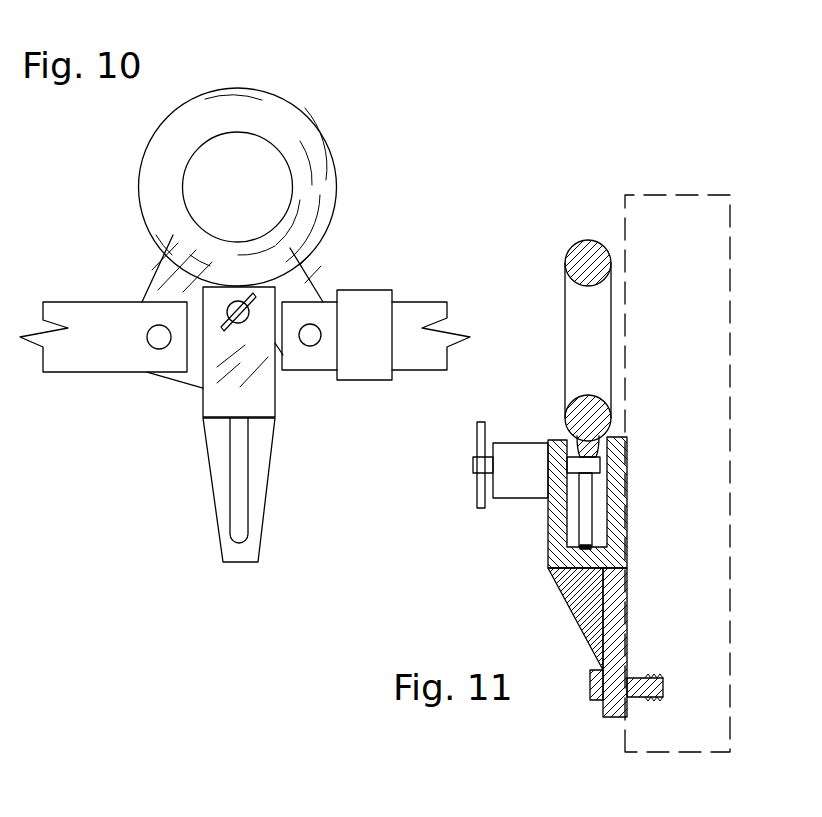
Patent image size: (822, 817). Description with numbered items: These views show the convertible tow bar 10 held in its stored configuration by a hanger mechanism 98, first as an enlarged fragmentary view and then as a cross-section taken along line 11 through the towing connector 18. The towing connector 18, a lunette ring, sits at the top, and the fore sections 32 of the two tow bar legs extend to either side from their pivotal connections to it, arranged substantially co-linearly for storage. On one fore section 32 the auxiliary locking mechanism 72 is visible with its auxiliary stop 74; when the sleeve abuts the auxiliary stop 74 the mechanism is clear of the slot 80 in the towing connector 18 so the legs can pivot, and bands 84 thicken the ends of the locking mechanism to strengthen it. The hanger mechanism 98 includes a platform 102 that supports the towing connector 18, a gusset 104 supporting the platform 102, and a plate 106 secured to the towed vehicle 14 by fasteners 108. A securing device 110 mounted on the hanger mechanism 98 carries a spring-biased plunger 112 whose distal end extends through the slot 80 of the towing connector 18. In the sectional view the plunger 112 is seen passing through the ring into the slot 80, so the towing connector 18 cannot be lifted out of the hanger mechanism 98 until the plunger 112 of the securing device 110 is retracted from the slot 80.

In FIG. 10, the convertible tow bar 10 is at (356, 124).
In FIG. 11, the convertible tow bar 10 is at (664, 276).
In FIG. 10, the section line 11- 11 is at (205, 608).
In FIG. 11, the towed vehicle 14 is at (693, 365).
In FIG. 10, the towing connector 18 is at (316, 128).
In FIG. 11, the towing connector 18 is at (567, 257).
In FIG. 10, the fore section 32 is at (90, 302).
In FIG. 10, the auxiliary locking mechanism 72 is at (425, 370).
In FIG. 10, the auxiliary stop 74 is at (322, 300).
In FIG. 10, the slot 80 is at (292, 399).
In FIG. 11, the slot 80 is at (590, 500).
In FIG. 10, the bands 84 is at (382, 380).
In FIG. 10, the hanger mechanism 98 is at (212, 397).
In FIG. 11, the hanger mechanism 98 is at (627, 519).
In FIG. 11, the platform 102 is at (582, 563).
In FIG. 10, the gusset 104 is at (240, 488).
In FIG. 11, the gusset 104 is at (585, 618).
In FIG. 11, the plate 106 is at (627, 617).
In FIG. 11, the fasteners 108 is at (665, 687).
In FIG. 11, the securing device 110 is at (477, 488).
In FIG. 11, the spring-biased plunger 112 is at (577, 462).